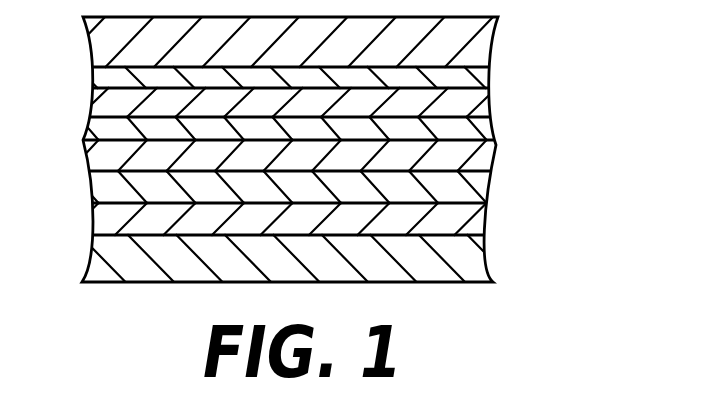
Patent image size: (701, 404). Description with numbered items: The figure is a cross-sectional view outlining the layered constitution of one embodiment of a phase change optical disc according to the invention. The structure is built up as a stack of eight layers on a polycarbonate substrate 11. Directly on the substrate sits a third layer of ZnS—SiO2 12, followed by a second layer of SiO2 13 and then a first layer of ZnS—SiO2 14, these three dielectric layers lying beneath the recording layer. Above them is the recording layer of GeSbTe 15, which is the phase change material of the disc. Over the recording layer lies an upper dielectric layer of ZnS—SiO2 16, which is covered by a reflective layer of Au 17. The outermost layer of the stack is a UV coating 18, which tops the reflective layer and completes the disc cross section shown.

The polycarbonate substrate 11 is at (475, 260).
The third layer of ZnS—SiO2 12 is at (483, 227).
The second layer of SiO2 13 is at (480, 188).
The first layer of ZnS—SiO2 14 is at (487, 157).
The recording layer of GeSbTe 15 is at (487, 128).
The upper dielectric layer of ZnS—SiO2 16 is at (482, 106).
The reflective layer of Au 17 is at (483, 77).
The UV coating 18 is at (492, 43).